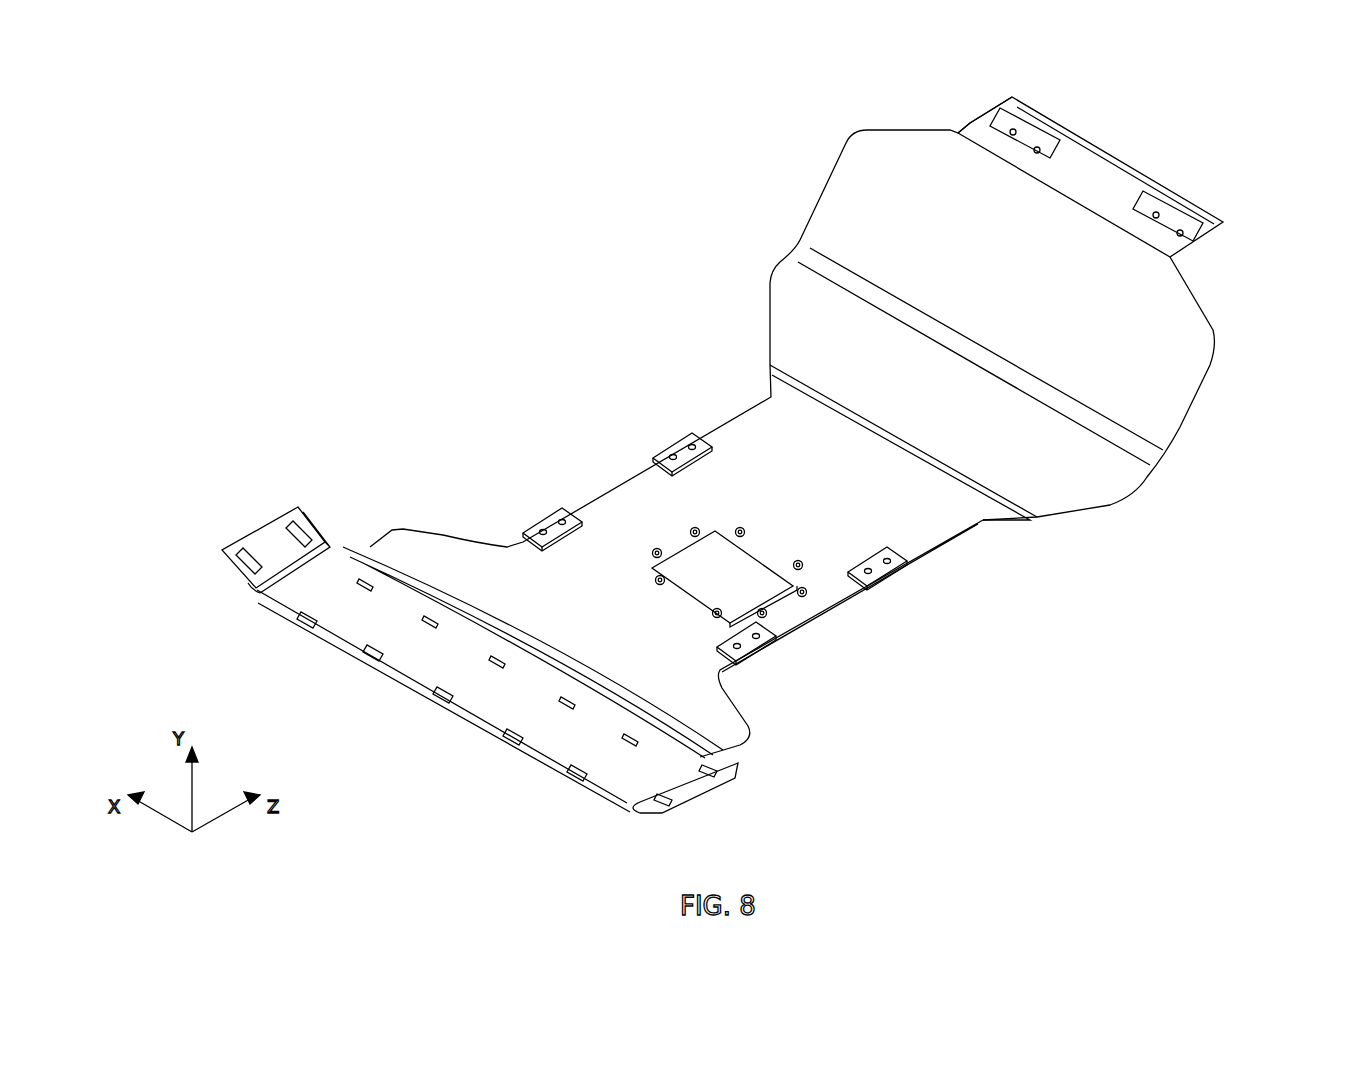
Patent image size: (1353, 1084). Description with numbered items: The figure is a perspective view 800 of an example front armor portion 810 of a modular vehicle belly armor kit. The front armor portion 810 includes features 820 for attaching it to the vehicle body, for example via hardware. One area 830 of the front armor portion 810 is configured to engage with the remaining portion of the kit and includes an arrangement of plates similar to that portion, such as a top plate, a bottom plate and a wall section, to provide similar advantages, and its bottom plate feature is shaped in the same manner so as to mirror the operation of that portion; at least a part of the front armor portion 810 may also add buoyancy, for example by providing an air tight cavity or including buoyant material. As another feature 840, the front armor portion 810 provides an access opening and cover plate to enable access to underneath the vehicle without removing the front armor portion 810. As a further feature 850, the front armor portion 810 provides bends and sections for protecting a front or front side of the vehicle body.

The perspective view 800 is at (707, 447).
The front armor portion 810 is at (707, 455).
The features for attaching to the vehicle body 820 is at (750, 777).
The area configured to engage with the portion 830 is at (265, 637).
The access opening and cover plate feature 840 is at (672, 532).
The bends and sections feature 850 is at (763, 267).